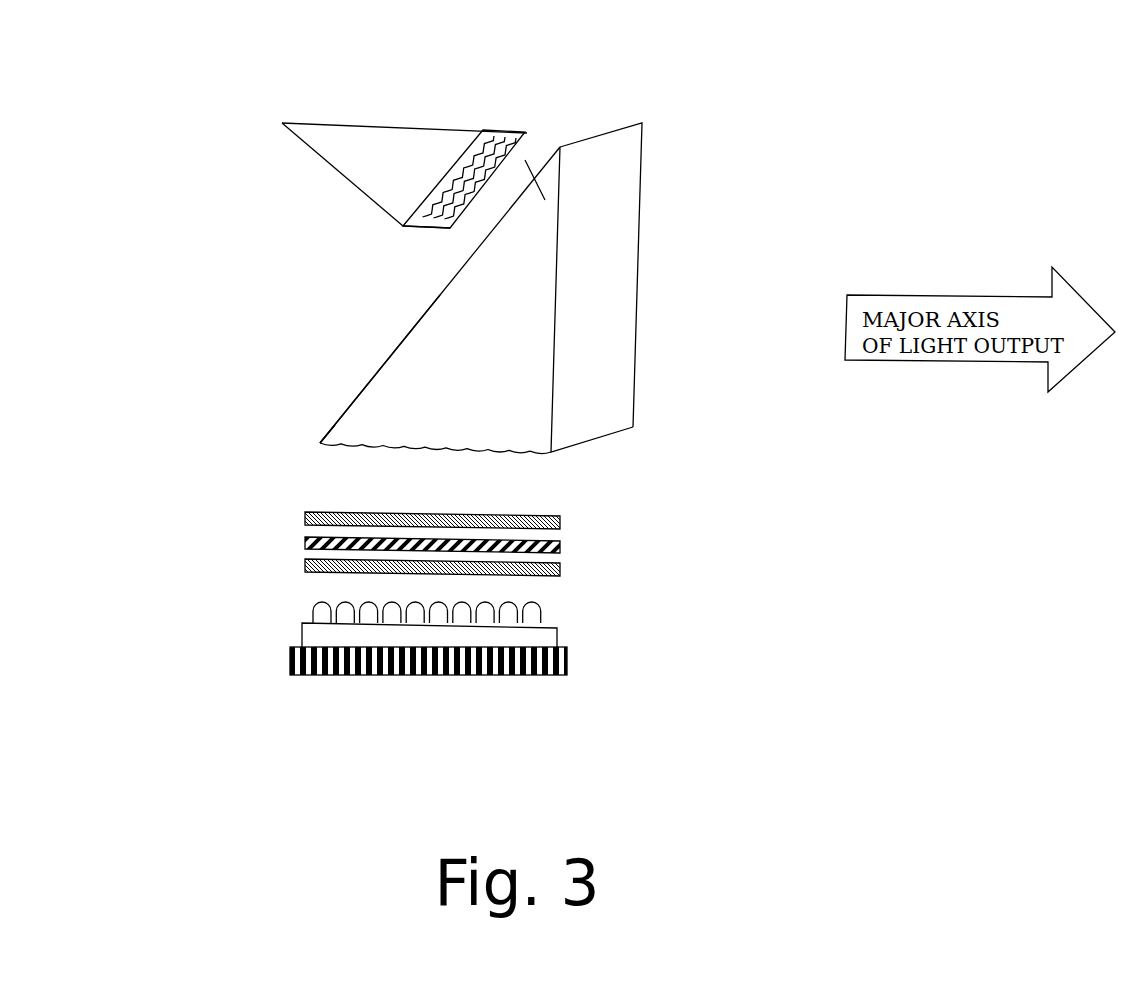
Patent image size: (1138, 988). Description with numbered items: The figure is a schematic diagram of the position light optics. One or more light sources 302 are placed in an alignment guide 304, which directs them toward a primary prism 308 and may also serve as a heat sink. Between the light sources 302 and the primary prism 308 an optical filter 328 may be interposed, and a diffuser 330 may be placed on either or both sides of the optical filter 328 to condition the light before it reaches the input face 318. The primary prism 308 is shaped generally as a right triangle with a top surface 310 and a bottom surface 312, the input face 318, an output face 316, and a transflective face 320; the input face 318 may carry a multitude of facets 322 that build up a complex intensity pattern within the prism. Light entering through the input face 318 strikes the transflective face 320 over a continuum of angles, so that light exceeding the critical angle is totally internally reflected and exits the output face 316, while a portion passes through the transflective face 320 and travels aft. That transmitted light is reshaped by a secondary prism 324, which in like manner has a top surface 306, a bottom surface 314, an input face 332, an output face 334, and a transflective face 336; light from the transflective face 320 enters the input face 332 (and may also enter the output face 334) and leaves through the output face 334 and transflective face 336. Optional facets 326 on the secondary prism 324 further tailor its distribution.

The light sources 302 is at (317, 603).
The alignment guide 304 is at (567, 662).
The top surface 306 is at (314, 156).
The primary prism 308 is at (486, 295).
The top surface 310 is at (525, 252).
The bottom surface 312 is at (642, 158).
The bottom surface 314 is at (512, 162).
The output face 316 is at (603, 322).
The input face 318 is at (332, 450).
The transflective face 320 is at (340, 412).
The facets 322 is at (517, 453).
The secondary prism 324 is at (318, 228).
The facets 326 is at (433, 224).
The optical filter 328 is at (303, 542).
The diffuser 330 is at (305, 520).
The input face 332 is at (525, 133).
The output face 334 is at (295, 135).
The transflective face 336 is at (390, 125).